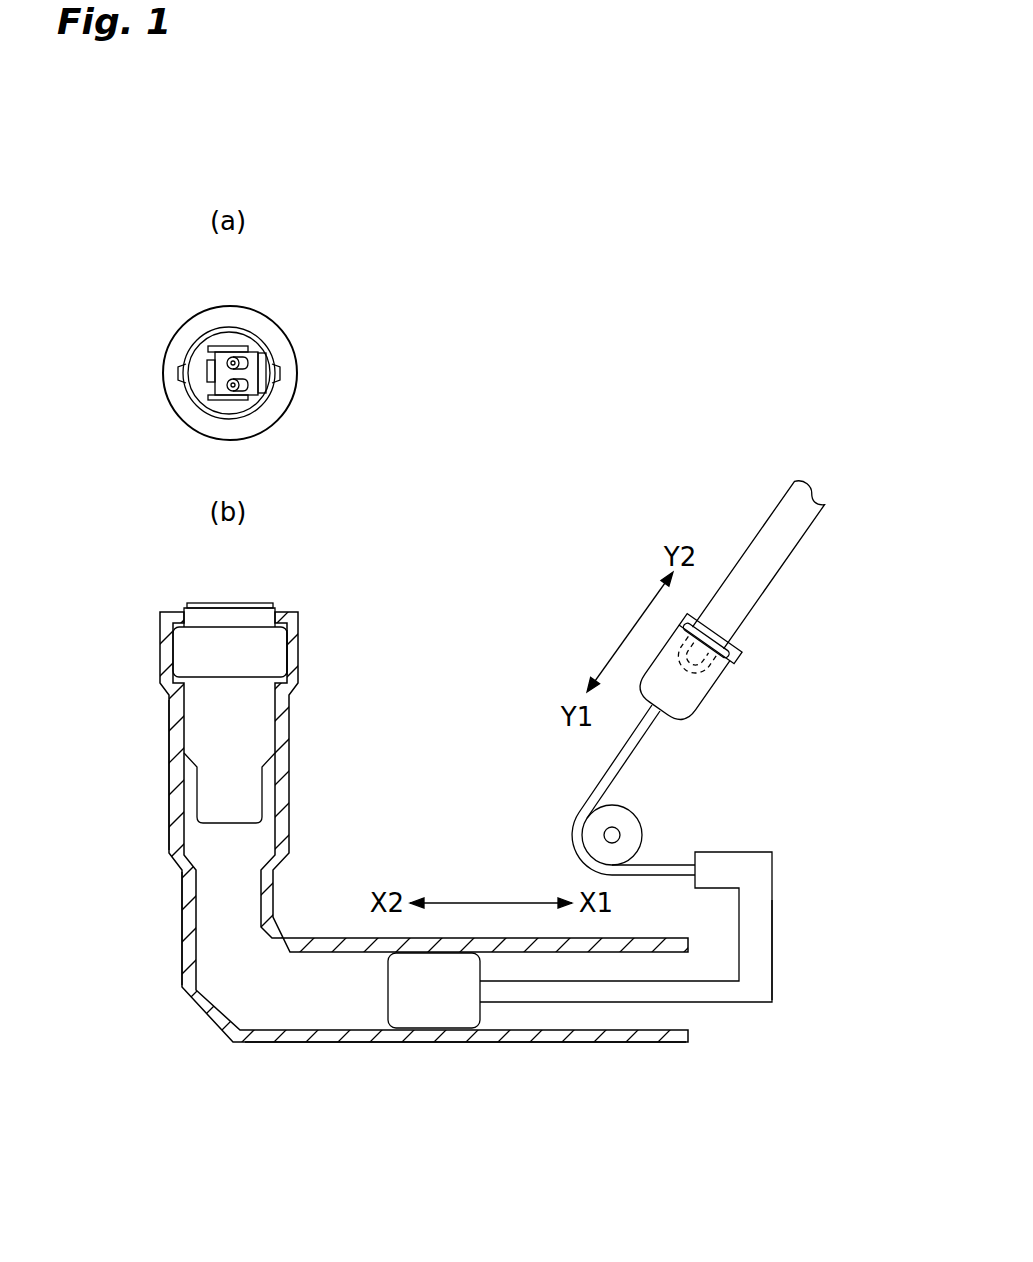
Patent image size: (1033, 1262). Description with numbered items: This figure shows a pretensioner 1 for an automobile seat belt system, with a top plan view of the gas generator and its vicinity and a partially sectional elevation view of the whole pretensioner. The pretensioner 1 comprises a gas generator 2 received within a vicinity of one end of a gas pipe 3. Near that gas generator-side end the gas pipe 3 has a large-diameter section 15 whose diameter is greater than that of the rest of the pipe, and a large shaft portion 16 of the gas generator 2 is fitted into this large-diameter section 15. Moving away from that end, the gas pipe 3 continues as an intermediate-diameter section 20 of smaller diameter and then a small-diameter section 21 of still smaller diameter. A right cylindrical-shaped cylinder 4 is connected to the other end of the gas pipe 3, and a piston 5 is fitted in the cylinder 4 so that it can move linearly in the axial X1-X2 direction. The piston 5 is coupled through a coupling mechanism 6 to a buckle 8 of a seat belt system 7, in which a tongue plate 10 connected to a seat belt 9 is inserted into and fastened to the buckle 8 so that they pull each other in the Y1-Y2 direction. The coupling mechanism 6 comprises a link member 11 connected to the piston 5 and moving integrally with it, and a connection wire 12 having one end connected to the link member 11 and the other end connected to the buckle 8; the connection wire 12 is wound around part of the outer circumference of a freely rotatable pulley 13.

The pretensioner 1 is at (448, 738).
The gas generator 2 is at (236, 338).
The gas pipe 3 is at (304, 399).
The cylinder 4 is at (378, 1043).
The piston 5 is at (441, 1015).
The coupling mechanism 6 is at (766, 826).
The seat belt system 7 is at (750, 506).
The buckle 8 is at (690, 708).
The seat belt 9 is at (768, 570).
The tongue plate 10 is at (733, 656).
The link member 11 is at (760, 988).
The connection wire 12 is at (612, 767).
The pulley 13 is at (632, 823).
The large-diameter section 15 is at (290, 648).
The large shaft portion 16 is at (188, 652).
The intermediate-diameter section 20 is at (177, 790).
The small-diameter section 21 is at (190, 900).